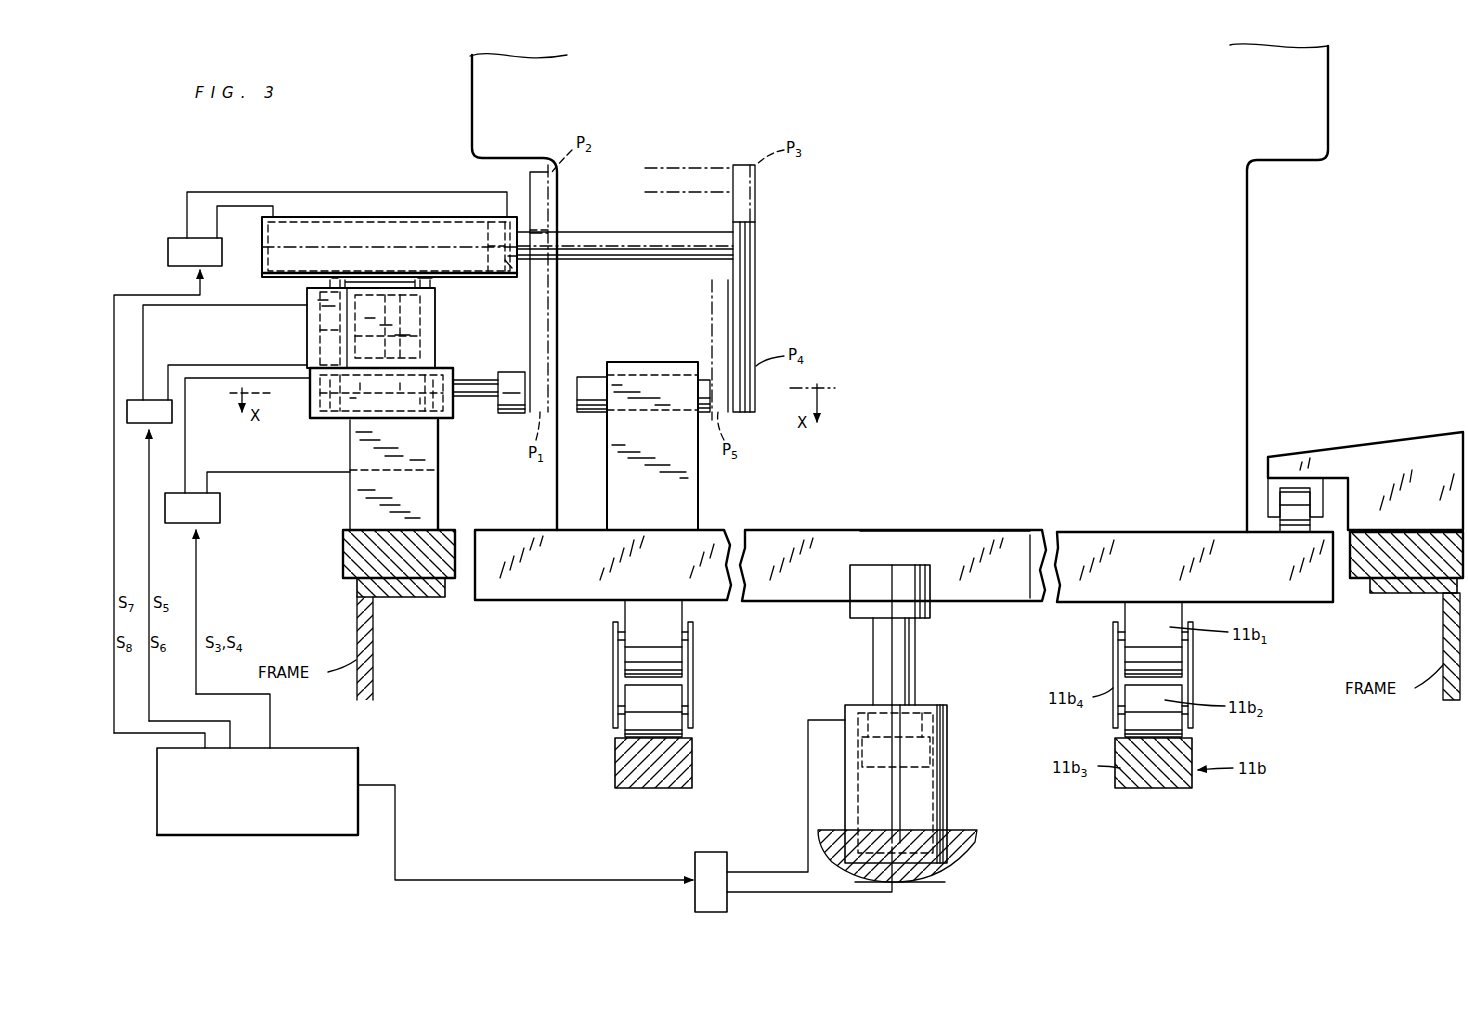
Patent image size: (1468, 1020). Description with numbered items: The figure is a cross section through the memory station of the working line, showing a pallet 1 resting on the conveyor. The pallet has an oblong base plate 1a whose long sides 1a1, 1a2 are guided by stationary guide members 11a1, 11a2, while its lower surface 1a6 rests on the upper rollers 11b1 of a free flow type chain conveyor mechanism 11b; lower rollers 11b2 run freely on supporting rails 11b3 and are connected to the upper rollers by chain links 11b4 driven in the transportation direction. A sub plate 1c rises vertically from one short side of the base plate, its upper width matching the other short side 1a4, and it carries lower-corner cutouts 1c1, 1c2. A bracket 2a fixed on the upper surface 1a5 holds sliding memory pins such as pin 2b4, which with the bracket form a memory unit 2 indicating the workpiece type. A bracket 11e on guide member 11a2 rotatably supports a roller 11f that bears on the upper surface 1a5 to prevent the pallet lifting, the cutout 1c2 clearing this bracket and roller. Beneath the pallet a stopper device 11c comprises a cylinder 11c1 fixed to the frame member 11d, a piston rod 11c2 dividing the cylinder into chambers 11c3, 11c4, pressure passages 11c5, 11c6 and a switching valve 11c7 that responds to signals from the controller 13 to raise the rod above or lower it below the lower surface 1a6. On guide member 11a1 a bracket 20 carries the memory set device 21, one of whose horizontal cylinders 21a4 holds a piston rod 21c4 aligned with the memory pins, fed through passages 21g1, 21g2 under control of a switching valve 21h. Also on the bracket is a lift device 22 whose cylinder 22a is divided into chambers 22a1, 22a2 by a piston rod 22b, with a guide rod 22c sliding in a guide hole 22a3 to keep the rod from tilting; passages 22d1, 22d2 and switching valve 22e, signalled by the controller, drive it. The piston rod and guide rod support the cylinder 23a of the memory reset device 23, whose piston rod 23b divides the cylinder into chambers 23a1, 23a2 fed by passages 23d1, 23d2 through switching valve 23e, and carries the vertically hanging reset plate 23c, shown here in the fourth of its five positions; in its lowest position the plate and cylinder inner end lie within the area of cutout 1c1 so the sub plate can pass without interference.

The pallet 1 is at (896, 530).
The base plate 1a is at (1015, 533).
The long side of the base plate 1a1 is at (477, 580).
The long side of the base plate 1a2 is at (1336, 604).
The short side of the base plate 1a4 is at (1020, 603).
The upper surface of the base plate 1a5 is at (1140, 532).
The lower surface of the base plate 1a6 is at (782, 602).
The sub plate 1c is at (1312, 133).
The cutout of the sub plate 1c1 is at (488, 172).
The cutout of the sub plate 1c2 is at (1298, 195).
The memory unit 2 is at (718, 490).
The bracket 2a is at (612, 476).
The memory pin 2b4 is at (588, 377).
The stationary guide member 11a1 is at (345, 558).
The stationary guide member 11a2 is at (1398, 582).
The free flow type chain conveyor mechanism 11b is at (585, 758).
The upper roller 11b1 is at (635, 621).
The lower roller 11b2 is at (672, 695).
The supporting rail 11b3 is at (683, 770).
The chain link 11b4 is at (693, 724).
The stopper device 11c is at (950, 820).
The cylinder 11c1 is at (948, 780).
The piston rod 11c2 is at (912, 655).
The chamber 11c3 is at (947, 722).
The chamber 11c4 is at (965, 862).
The pressure passage 11c5 is at (760, 872).
The pressure passage 11c6 is at (806, 892).
The switching valve 11c7 is at (710, 912).
The frame member 11d is at (928, 882).
The bracket 11e is at (1420, 445).
The roller 11f is at (1296, 492).
The controller 13 is at (360, 770).
The bracket 20 is at (350, 506).
The memory set device 21 is at (310, 414).
The cylinder 21a4 is at (340, 418).
The piston rod 21c4 is at (486, 400).
The pressure passage 21g1 is at (200, 378).
The pressure passage 21g2 is at (240, 472).
The switching valve 21h is at (214, 524).
The lift device 22 is at (445, 314).
The cylinder 22a is at (440, 348).
The chamber 22a1 is at (440, 326).
The chamber 22a2 is at (430, 360).
The guide hole 22a3 is at (307, 352).
The piston rod 22b is at (435, 284).
The guide rod 22c is at (330, 285).
The pressure passage 22d1 is at (207, 305).
The pressure passage 22d2 is at (202, 365).
The switching valve 22e is at (136, 424).
The memory reset device 23 is at (262, 258).
The cylinder 23a is at (303, 217).
The chamber 23a1 is at (520, 268).
The chamber 23a2 is at (362, 217).
The piston rod 23b is at (604, 233).
The reset plate 23c is at (757, 306).
The pressure passage 23d1 is at (218, 192).
The pressure passage 23d2 is at (238, 206).
The switching valve 23e is at (168, 240).